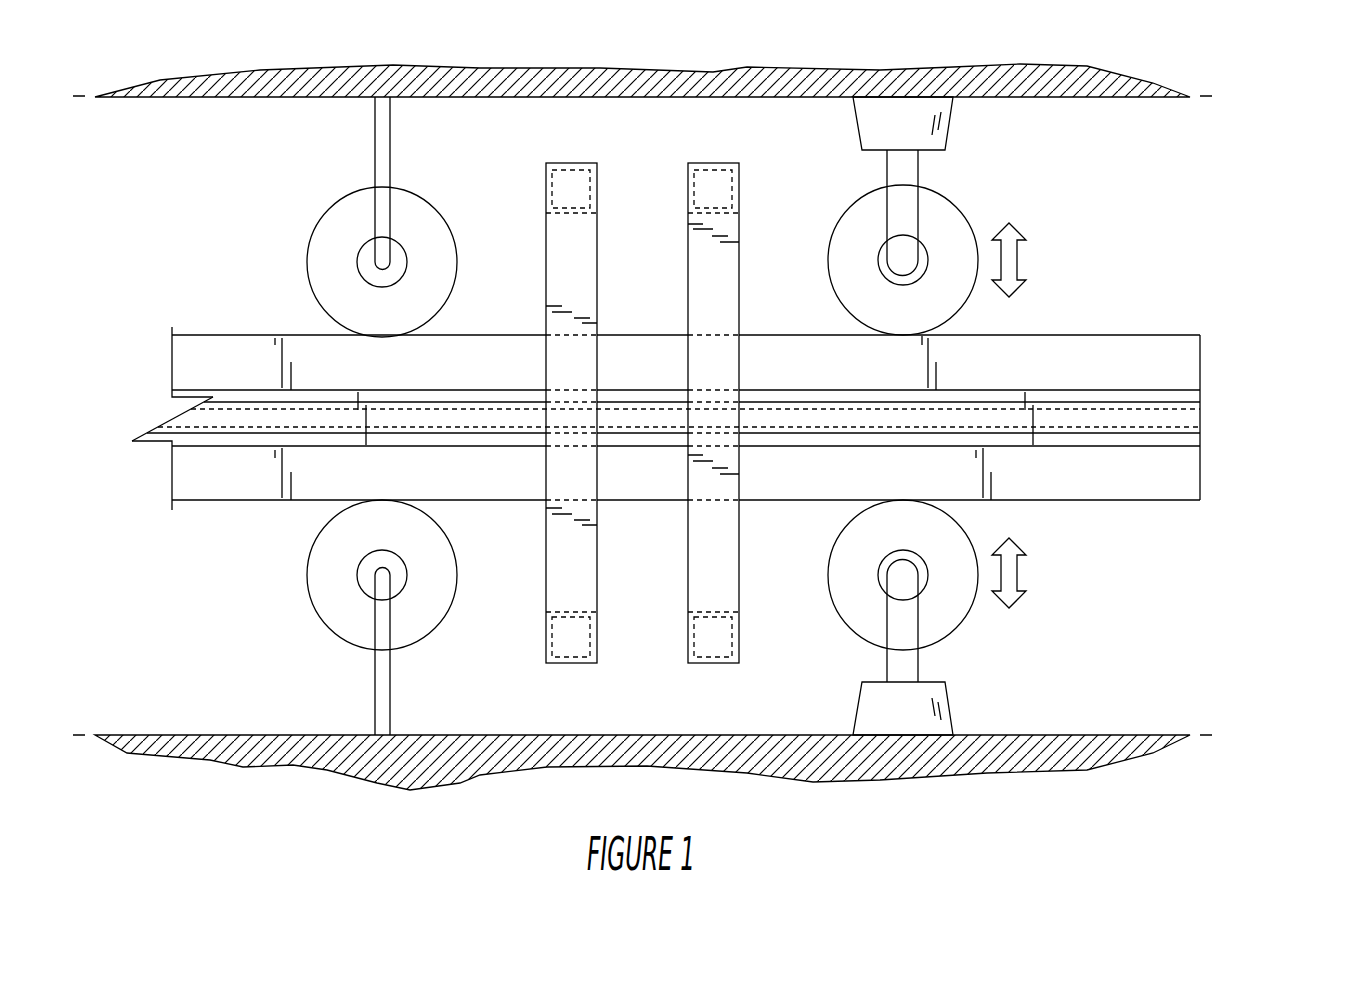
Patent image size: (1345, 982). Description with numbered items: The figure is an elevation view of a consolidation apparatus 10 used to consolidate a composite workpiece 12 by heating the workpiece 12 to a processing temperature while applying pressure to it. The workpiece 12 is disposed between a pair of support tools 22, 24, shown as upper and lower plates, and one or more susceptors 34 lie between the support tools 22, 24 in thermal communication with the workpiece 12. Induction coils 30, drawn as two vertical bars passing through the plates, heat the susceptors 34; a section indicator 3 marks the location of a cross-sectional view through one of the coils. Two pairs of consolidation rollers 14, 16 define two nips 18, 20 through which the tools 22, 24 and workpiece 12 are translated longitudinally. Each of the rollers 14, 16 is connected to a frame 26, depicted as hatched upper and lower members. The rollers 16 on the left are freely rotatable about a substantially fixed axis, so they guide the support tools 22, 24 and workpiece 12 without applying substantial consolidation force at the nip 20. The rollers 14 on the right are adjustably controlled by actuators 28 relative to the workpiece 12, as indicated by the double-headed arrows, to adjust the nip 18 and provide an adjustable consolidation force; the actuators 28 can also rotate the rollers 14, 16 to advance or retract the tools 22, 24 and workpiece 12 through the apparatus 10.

The consolidation apparatus 10 is at (1222, 132).
The composite workpiece 12 is at (1150, 417).
The consolidation rollers 14 is at (960, 210).
The consolidation rollers 16 is at (322, 212).
The nip 18 is at (975, 323).
The nip 20 is at (318, 323).
The support tool 22 is at (1200, 468).
The support tool 24 is at (1202, 352).
The frame 26 is at (720, 97).
The actuators 28 is at (950, 118).
The induction coils 30 is at (566, 163).
The susceptors 34 is at (1200, 403).
The section line 3- 3 is at (715, 188).